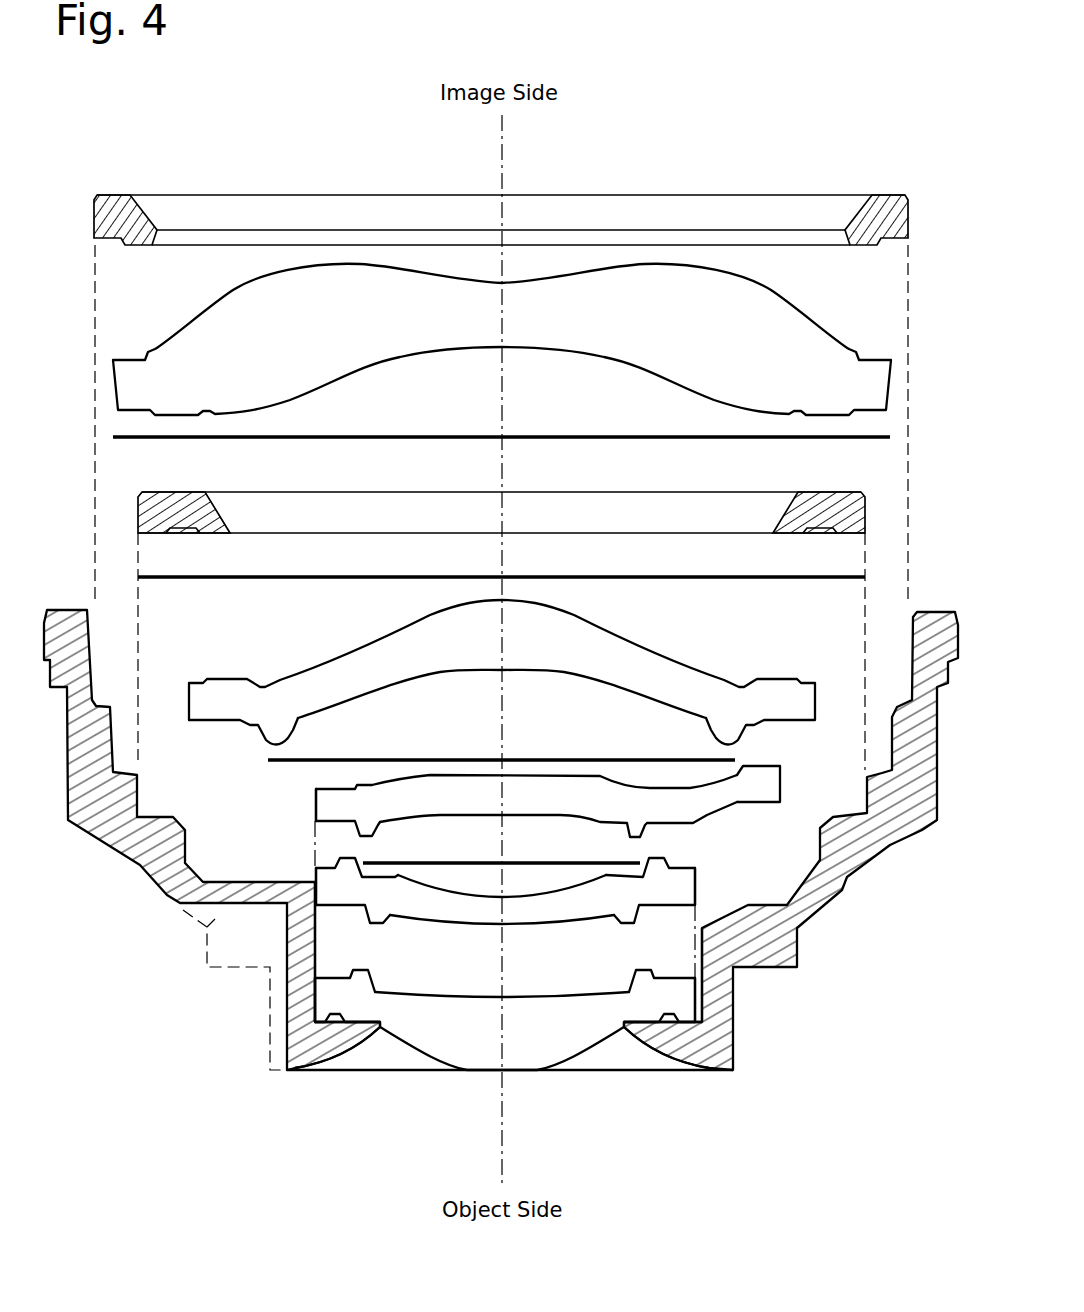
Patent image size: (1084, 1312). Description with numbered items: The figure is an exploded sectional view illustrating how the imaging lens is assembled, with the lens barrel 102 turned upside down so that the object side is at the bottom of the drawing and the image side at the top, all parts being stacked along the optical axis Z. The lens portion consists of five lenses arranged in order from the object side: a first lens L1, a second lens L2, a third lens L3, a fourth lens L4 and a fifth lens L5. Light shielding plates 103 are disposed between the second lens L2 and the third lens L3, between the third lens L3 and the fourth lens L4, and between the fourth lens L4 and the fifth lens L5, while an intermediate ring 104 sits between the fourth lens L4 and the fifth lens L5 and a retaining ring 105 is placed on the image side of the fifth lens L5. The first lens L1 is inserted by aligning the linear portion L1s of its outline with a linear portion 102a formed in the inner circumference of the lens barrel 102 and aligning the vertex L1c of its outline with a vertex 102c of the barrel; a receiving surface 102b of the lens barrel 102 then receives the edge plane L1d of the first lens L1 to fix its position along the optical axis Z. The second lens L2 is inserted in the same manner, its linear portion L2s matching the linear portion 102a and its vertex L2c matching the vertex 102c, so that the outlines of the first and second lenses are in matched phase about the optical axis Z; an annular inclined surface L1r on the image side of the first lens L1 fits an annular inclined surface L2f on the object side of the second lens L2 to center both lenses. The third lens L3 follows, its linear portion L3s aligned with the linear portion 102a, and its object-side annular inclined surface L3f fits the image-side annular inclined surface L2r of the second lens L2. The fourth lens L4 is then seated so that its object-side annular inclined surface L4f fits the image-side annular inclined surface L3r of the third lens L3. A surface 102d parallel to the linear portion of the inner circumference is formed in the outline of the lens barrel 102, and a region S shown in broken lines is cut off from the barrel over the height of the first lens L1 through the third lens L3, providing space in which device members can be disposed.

The lens barrel 102 is at (143, 870).
The linear portion 102a is at (313, 977).
The receiving surface 102b is at (330, 1022).
The vertex 102c is at (700, 963).
The surface 102d is at (310, 1027).
The light shielding plate 103 is at (348, 437).
The intermediate ring 104 is at (822, 488).
The retaining ring 105 is at (888, 246).
The region S is at (203, 937).
The optical axis Z is at (502, 1143).
The first lens L1 is at (498, 1037).
The annular inclined surface L1r is at (372, 982).
The edge plane L1d is at (362, 1025).
The linear portion L1s is at (313, 993).
The vertex L1c is at (697, 990).
The second lens L2 is at (505, 899).
The annular inclined surface L2r is at (630, 866).
The annular inclined surface L2f is at (357, 923).
The linear portion L2s is at (315, 872).
The vertex L2c is at (697, 885).
The third lens L3 is at (506, 790).
The annular inclined surface L3r is at (720, 763).
The annular inclined surface L3f is at (647, 828).
The linear portion L3s is at (315, 803).
The fourth lens L4 is at (502, 677).
The annular inclined surface L4f is at (740, 728).
The fifth lens L5 is at (567, 325).